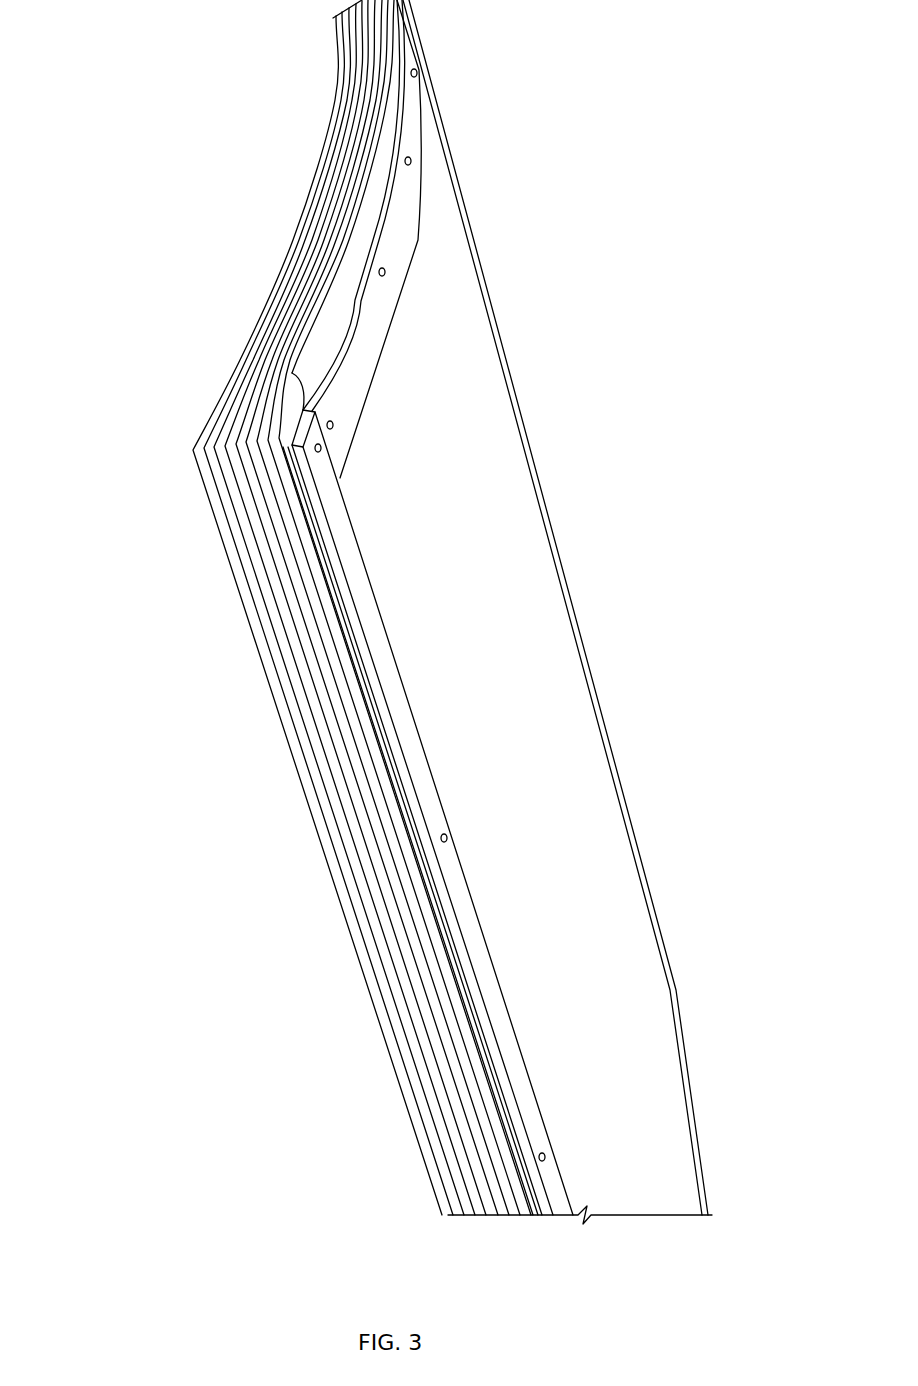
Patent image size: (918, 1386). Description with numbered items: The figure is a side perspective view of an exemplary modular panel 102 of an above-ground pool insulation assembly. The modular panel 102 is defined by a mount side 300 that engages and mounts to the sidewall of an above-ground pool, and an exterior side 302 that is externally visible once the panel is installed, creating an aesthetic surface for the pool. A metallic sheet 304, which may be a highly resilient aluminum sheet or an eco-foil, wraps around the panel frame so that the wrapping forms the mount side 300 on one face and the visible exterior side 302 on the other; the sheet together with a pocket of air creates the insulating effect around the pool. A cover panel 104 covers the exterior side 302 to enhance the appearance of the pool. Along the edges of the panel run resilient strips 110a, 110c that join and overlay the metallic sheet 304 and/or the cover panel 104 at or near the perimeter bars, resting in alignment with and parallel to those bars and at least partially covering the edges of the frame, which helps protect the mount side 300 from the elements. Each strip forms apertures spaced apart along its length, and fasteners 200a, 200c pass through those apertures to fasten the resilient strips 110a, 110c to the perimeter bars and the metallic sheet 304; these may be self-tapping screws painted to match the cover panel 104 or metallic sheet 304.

The modular panel 102 is at (663, 117).
The cover panel 104 is at (513, 653).
The resilient strip 110a is at (417, 733).
The resilient strip 110c is at (390, 333).
The fastener 200a is at (444, 838).
The fastener 200c is at (382, 272).
The mount side 300 is at (148, 465).
The exterior side 302 is at (613, 462).
The metallic sheet 304 is at (270, 662).